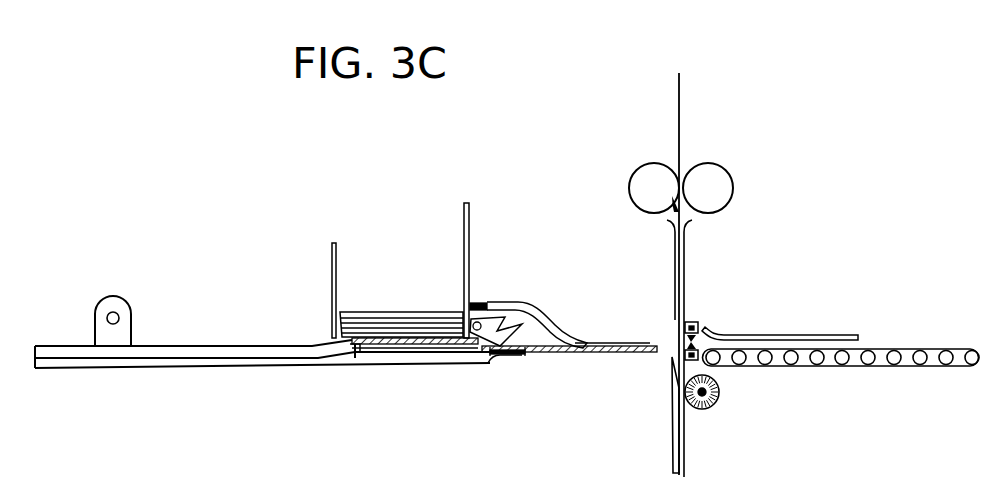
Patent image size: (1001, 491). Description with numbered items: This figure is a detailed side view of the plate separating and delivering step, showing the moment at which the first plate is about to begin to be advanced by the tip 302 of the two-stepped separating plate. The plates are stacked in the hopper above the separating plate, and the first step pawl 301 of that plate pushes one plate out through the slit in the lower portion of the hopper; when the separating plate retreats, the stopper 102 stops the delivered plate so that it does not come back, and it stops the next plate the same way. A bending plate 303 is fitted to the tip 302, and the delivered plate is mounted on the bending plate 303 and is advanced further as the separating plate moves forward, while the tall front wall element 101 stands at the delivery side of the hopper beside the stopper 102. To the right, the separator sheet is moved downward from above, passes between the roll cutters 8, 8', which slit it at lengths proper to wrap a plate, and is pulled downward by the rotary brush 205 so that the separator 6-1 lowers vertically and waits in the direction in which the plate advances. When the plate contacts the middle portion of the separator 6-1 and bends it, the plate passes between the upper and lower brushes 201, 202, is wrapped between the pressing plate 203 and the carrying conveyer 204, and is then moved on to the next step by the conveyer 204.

The first step pawl 301 is at (355, 350).
The front separating plate 101 is at (461, 350).
The stopper 102 is at (493, 356).
The tip of the separating plate 302 is at (523, 355).
The bending plate 303 is at (592, 355).
The roll cutter 8 is at (640, 170).
The roll cutter 8' is at (725, 170).
The separator 6-1 is at (676, 250).
The upper brush 201 is at (698, 322).
The lower brush 202 is at (698, 361).
The pressing plate 203 is at (793, 334).
The carrying conveyer 204 is at (826, 352).
The rotary brush 205 is at (710, 405).